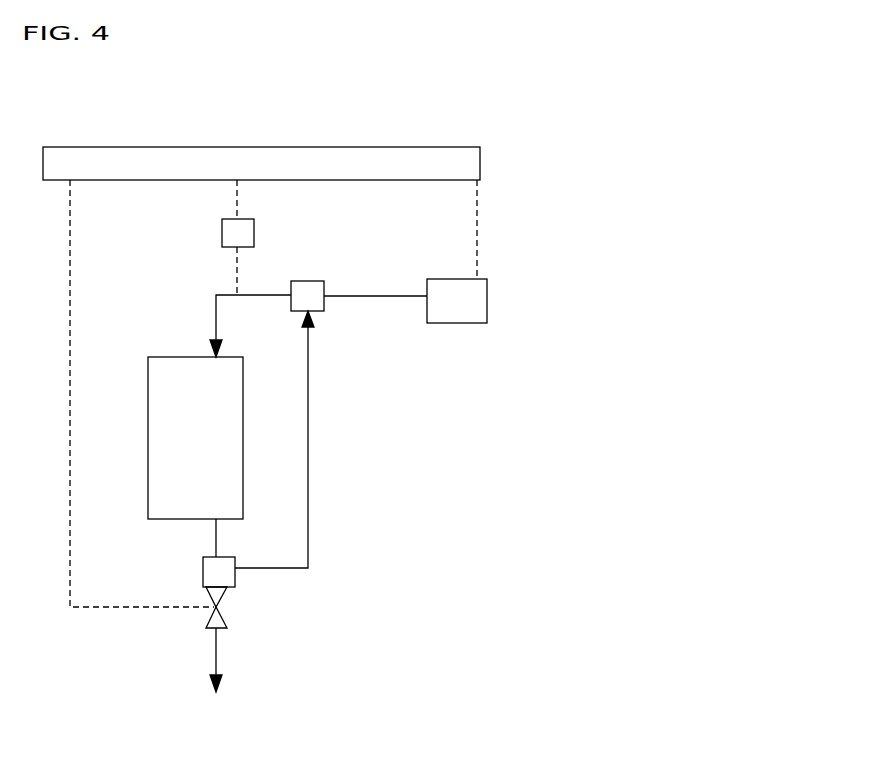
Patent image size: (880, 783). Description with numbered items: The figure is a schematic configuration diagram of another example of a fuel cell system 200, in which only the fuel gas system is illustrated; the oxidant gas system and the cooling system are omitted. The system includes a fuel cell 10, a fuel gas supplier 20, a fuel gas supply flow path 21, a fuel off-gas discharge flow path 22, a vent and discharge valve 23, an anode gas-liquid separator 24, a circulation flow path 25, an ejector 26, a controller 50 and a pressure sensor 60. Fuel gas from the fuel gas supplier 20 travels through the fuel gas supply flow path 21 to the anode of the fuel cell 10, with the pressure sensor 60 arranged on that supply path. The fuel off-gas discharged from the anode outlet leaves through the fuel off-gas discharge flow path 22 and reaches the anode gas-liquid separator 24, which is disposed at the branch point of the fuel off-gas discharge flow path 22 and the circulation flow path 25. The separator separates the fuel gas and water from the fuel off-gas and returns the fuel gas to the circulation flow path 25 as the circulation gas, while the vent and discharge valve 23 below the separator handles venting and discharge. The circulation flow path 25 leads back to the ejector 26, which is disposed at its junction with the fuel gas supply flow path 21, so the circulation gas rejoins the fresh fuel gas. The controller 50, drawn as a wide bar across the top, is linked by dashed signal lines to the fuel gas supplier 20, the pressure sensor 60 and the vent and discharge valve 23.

The fuel cell system 200 is at (500, 87).
The controller 50 is at (482, 160).
The pressure sensor 60 is at (222, 238).
The ejector 26 is at (306, 281).
The fuel gas supplier 20 is at (465, 279).
The fuel gas supply flow path 21 is at (216, 325).
The fuel cell 10 is at (148, 428).
The circulation flow path 25 is at (307, 473).
The fuel off-gas discharge flow path 22 is at (216, 553).
The anode gas-liquid separator 24 is at (203, 578).
The vent and discharge valve 23 is at (219, 605).